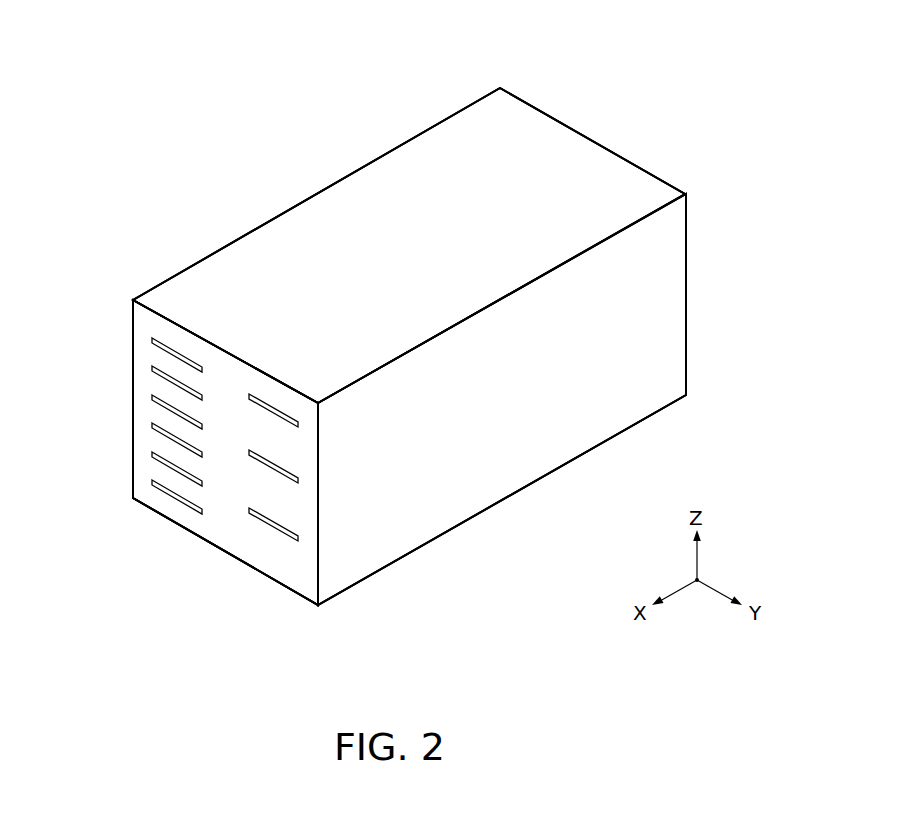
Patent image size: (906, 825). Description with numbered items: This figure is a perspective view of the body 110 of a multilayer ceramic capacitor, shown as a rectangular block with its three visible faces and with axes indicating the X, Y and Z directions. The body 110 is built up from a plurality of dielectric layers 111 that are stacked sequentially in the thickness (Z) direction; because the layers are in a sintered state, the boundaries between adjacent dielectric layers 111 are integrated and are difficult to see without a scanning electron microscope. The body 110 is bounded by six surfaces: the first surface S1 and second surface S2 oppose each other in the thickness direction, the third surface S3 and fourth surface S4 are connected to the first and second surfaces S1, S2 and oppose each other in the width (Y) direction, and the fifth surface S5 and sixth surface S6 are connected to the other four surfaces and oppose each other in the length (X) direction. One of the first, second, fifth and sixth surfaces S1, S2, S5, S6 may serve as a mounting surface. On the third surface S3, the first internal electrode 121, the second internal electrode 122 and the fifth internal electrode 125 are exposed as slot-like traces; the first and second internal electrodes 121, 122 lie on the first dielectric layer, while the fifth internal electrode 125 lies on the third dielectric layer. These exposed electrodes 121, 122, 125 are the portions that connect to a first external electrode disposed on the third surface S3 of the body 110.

The body 110 is at (204, 38).
The dielectric layers 111 is at (152, 383).
The first internal electrode 121 is at (153, 340).
The second internal electrode 122 is at (298, 422).
The fifth internal electrode 125 is at (153, 369).
The first surface S1 is at (423, 175).
The second surface S2 is at (447, 542).
The third surface S3 is at (218, 455).
The fourth surface S4 is at (616, 137).
The fifth surface S5 is at (568, 434).
The sixth surface S6 is at (240, 226).